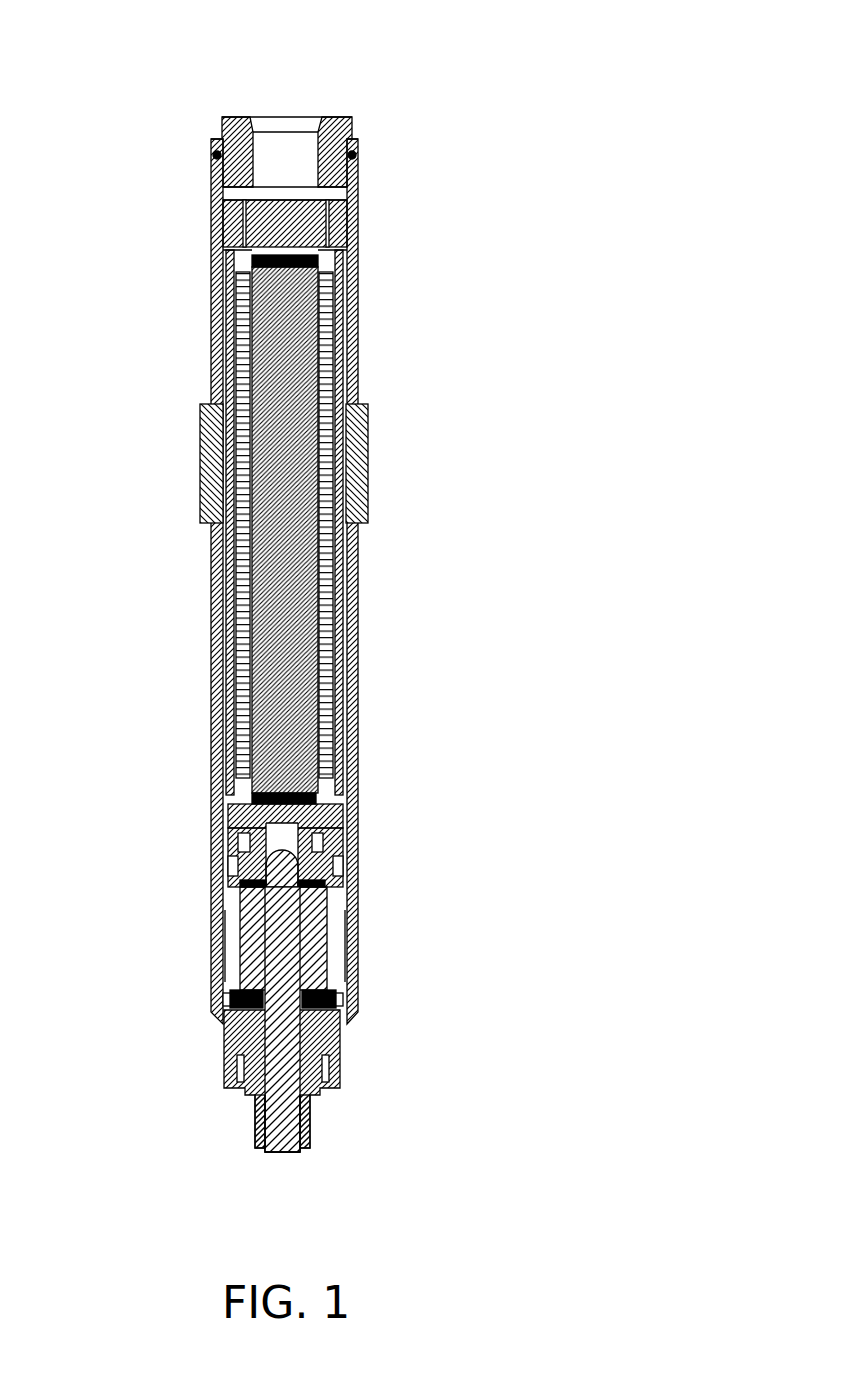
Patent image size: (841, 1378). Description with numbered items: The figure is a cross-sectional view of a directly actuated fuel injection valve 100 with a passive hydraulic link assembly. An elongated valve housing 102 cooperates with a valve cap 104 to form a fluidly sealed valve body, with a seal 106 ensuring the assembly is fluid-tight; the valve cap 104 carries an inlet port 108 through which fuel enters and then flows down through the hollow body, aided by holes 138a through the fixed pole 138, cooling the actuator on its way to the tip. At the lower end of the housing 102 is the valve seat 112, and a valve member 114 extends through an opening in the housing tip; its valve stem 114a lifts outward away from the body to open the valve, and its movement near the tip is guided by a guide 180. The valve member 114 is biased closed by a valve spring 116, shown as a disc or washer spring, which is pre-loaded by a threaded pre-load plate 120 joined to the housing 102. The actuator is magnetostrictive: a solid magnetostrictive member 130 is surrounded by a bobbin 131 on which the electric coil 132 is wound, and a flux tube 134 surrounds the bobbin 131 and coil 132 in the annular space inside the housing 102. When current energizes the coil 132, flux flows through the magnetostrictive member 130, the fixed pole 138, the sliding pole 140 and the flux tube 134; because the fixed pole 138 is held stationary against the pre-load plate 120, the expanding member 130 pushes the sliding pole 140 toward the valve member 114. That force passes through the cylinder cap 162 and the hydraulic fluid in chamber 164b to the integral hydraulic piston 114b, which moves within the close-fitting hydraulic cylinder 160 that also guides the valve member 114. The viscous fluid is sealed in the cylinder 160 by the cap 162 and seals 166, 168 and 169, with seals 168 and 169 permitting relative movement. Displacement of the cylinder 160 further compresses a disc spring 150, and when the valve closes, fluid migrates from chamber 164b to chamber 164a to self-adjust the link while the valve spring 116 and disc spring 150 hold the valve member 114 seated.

The injection valve 100 is at (226, 70).
The valve housing 102 is at (358, 200).
The valve cap 104 is at (353, 124).
The seal 106 is at (354, 157).
The inlet port 108 is at (292, 122).
The pre-load plate 120 is at (358, 236).
The fixed pole 138 is at (358, 275).
The holes 138a is at (232, 250).
The flux tube 134 is at (358, 350).
The electric coil 132 is at (340, 448).
The magnetostrictive member 130 is at (250, 585).
The bobbin 131 is at (353, 737).
The sliding pole 140 is at (230, 800).
The cylinder cap 162 is at (350, 825).
The seal 166 is at (345, 845).
The seal 169 is at (350, 851).
The hydraulic fluid chamber 164b is at (235, 865).
The hydraulic fluid chamber 164a is at (237, 955).
The hydraulic piston 114b is at (340, 915).
The hydraulic cylinder 160 is at (345, 940).
The seal 168 is at (338, 996).
The valve spring 116 is at (230, 990).
The disc spring 150 is at (213, 1018).
The valve member 114 is at (337, 1060).
The guide 180 is at (327, 1088).
The valve stem 114a is at (307, 1123).
The valve seat 112 is at (300, 1152).